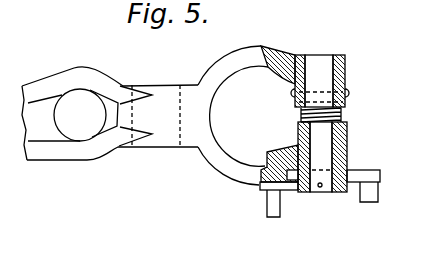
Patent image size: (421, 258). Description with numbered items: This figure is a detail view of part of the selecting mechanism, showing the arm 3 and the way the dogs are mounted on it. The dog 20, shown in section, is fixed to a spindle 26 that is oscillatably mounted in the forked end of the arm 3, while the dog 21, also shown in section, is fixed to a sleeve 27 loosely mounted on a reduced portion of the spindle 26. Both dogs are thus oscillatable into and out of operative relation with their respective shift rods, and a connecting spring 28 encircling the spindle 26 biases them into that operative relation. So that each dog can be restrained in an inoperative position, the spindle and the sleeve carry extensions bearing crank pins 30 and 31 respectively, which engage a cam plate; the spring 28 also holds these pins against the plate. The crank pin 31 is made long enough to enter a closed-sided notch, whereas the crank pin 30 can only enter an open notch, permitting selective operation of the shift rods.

The arm 3 is at (209, 156).
The dog 20 is at (347, 84).
The dog 21 is at (298, 138).
The spindle 26 is at (320, 63).
The sleeve 27 is at (347, 150).
The connecting spring 28 is at (339, 117).
The crank pin 30 is at (274, 215).
The crank pin 31 is at (375, 200).